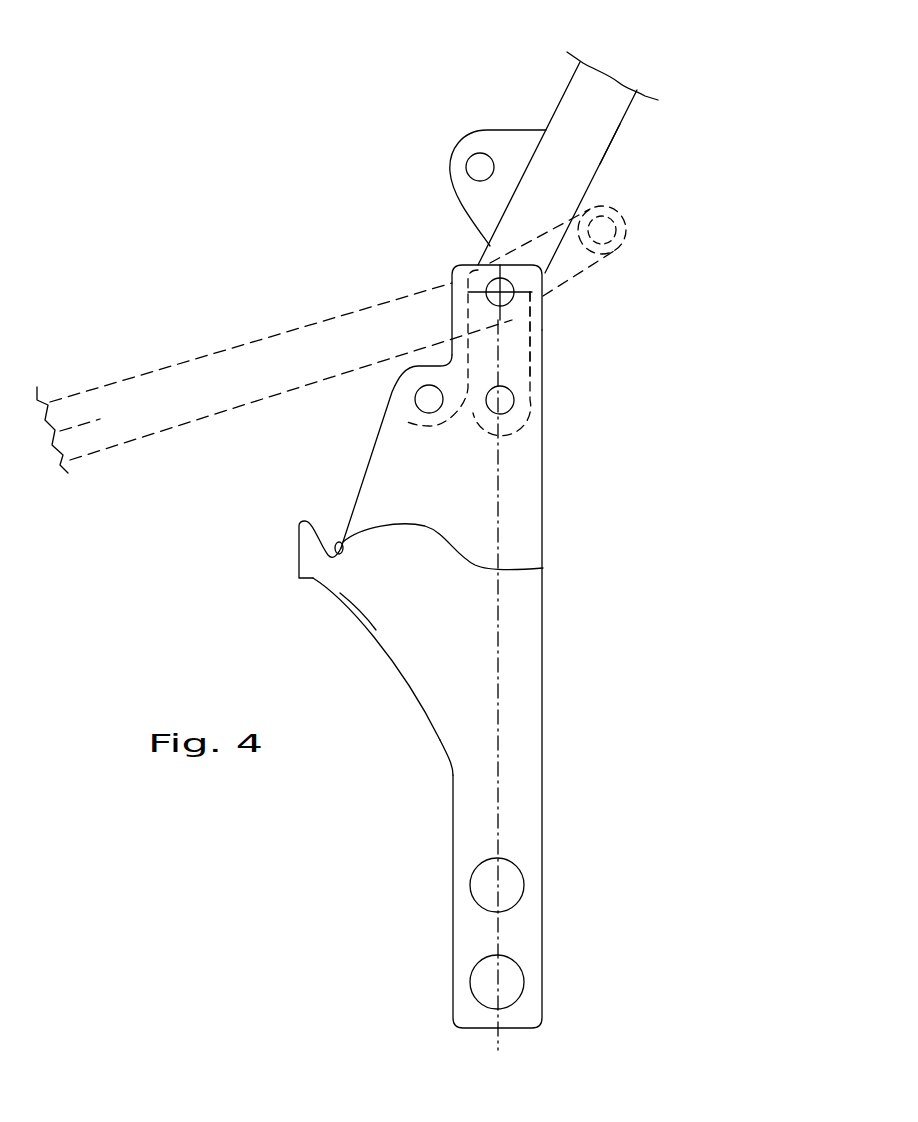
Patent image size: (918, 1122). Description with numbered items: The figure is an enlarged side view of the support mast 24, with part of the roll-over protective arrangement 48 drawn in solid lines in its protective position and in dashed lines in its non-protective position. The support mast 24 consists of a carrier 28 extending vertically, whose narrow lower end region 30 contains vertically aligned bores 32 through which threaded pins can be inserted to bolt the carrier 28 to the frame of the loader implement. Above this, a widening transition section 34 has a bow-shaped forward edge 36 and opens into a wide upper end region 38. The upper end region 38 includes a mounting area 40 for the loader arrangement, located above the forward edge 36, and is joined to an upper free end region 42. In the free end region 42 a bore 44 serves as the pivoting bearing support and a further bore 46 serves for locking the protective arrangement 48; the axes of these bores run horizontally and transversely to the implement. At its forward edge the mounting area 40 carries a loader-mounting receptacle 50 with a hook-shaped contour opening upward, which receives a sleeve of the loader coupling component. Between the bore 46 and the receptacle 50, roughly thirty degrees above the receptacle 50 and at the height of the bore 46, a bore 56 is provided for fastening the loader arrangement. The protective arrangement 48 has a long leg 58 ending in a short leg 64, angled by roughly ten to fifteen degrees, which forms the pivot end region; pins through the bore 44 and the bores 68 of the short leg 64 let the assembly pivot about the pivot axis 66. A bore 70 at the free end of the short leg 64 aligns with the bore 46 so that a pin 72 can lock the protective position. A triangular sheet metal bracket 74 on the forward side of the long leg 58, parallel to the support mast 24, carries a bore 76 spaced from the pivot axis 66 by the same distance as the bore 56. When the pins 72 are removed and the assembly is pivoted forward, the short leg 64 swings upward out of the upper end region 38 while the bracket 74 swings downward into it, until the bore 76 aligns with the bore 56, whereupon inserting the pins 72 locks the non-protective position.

The support mast 24 is at (591, 685).
The carrier 28 is at (523, 702).
The narrow lower end region 30 is at (523, 818).
The bores 32 is at (507, 882).
The widening transition section 34 is at (447, 667).
The forward edge 36 is at (372, 628).
The upper end region 38 is at (450, 457).
The mounting area 40 is at (430, 592).
The upper free end region 42 is at (543, 308).
The bore 44 is at (510, 303).
The bore 46 is at (513, 403).
The roll-over protective arrangement 48 is at (607, 117).
The loader-mounting receptacle 50 is at (530, 568).
The bore 56 is at (415, 407).
The long leg 58 is at (632, 92).
The short leg 64 is at (612, 260).
The pivot axis 66 is at (478, 298).
The bores 68 is at (488, 282).
The bore 70 is at (608, 223).
The pins 72 is at (505, 408).
The bracket 74 is at (513, 140).
The bore 76 is at (477, 165).